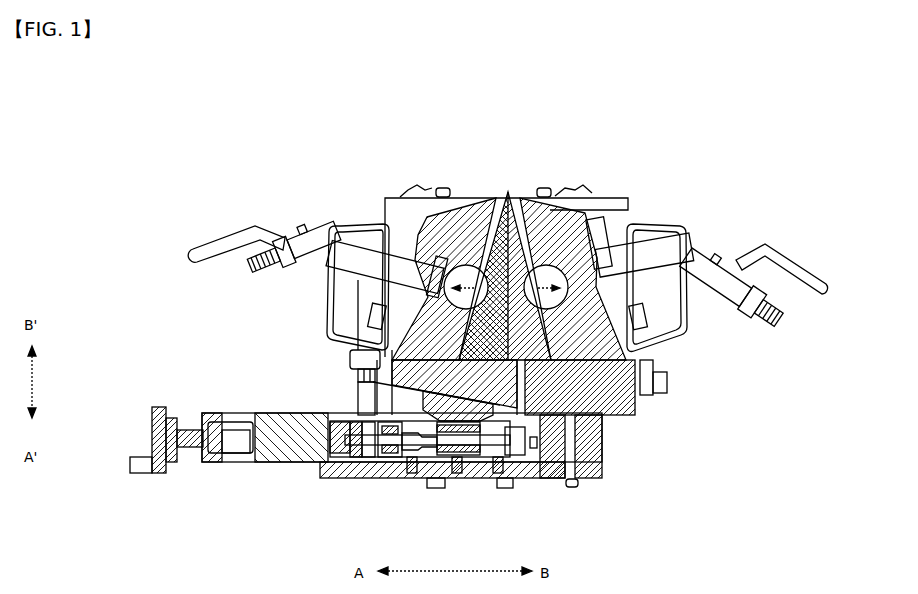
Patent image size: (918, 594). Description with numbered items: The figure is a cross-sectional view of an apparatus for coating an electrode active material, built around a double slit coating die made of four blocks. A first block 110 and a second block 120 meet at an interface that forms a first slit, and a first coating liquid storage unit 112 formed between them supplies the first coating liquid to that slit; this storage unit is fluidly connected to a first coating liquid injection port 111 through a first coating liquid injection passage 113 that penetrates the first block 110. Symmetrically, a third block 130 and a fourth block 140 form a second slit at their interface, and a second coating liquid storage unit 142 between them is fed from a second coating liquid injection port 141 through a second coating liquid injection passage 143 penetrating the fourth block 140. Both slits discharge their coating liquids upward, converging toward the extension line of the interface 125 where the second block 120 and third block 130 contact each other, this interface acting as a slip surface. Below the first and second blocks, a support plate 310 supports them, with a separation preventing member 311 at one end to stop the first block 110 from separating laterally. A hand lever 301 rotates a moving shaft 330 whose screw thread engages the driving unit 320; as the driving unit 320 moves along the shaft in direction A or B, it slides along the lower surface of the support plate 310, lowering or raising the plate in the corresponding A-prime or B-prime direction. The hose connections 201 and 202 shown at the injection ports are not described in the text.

The first block 110 is at (400, 197).
The first coating liquid injection port 111 is at (278, 232).
The first coating liquid storage unit 112 is at (333, 333).
The first coating liquid injection passage 113 is at (336, 232).
The second block 120 is at (455, 178).
The interface 125 is at (500, 327).
The third block 130 is at (562, 194).
The fourth block 140 is at (612, 196).
The second coating liquid injection port 141 is at (695, 248).
The second coating liquid storage unit 142 is at (640, 328).
The second coating liquid injection passage 143 is at (662, 232).
The first hose connector 201 is at (248, 277).
The second hose connector 202 is at (785, 313).
The hand lever 301 is at (133, 450).
The support plate 310 is at (356, 380).
The separation preventing member 311 is at (348, 353).
The driving unit 320 is at (393, 458).
The moving shaft 330 is at (547, 480).